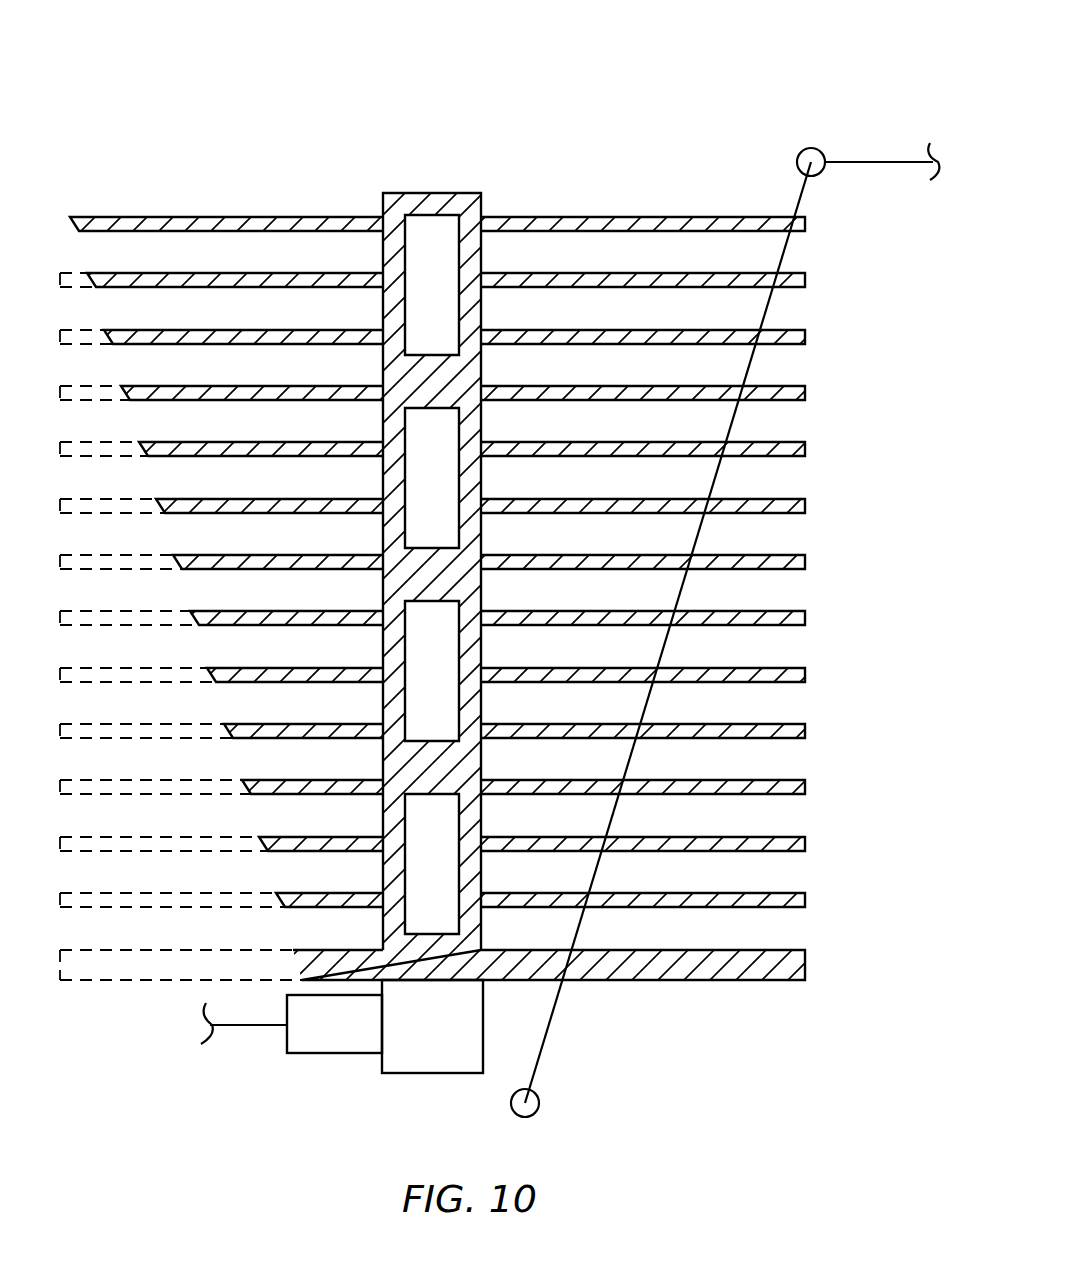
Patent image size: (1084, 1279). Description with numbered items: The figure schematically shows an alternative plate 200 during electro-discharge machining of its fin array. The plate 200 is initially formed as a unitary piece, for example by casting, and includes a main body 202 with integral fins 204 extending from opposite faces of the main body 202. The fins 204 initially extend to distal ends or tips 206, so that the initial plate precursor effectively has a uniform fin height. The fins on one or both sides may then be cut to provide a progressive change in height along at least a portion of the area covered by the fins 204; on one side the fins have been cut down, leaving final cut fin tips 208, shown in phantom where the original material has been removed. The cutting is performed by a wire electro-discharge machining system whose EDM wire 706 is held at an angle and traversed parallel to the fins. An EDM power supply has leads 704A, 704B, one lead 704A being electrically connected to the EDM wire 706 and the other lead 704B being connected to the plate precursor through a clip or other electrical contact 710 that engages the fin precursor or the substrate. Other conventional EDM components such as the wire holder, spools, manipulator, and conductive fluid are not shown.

The plate 200 is at (447, 96).
The main body 202 is at (482, 201).
The fins 204 is at (630, 217).
The distal ends/tips 206 is at (805, 280).
The final cut fin tips 208 is at (258, 847).
The EDM wire 706 is at (800, 192).
The lead 704A is at (882, 162).
The lead 704B is at (247, 1027).
The electrical contact 710 is at (358, 1040).